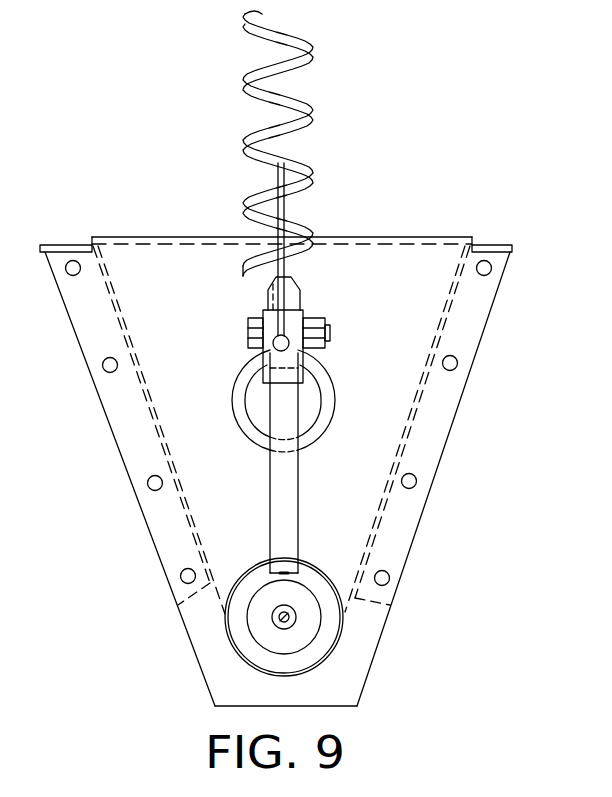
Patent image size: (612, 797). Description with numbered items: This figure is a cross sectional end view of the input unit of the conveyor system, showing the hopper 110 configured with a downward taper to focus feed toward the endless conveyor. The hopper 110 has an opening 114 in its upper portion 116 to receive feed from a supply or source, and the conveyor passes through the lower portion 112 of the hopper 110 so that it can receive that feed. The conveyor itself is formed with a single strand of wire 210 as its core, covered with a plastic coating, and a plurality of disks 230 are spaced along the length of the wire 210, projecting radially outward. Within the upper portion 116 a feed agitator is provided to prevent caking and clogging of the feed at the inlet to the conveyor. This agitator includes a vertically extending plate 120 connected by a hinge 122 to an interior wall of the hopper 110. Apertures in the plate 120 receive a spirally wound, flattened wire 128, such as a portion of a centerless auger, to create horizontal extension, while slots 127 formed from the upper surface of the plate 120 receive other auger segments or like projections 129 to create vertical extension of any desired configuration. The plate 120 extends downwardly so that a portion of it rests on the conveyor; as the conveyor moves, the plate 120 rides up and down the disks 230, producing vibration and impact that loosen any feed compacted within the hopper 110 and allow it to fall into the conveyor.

The hopper 110 is at (306, 444).
The lower portion 112 is at (409, 565).
The opening 114 is at (385, 234).
The upper portion 116 is at (498, 301).
The vertically extending plate 120 is at (297, 497).
The hinge 122 is at (290, 345).
The slots 127 is at (298, 292).
The spirally wound, flattened wire 128 is at (331, 402).
The projections 129 is at (308, 174).
The wire 210 is at (296, 617).
The disks 230 is at (280, 647).